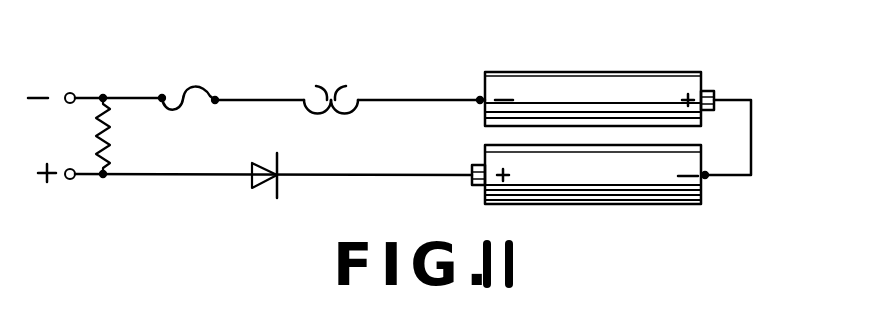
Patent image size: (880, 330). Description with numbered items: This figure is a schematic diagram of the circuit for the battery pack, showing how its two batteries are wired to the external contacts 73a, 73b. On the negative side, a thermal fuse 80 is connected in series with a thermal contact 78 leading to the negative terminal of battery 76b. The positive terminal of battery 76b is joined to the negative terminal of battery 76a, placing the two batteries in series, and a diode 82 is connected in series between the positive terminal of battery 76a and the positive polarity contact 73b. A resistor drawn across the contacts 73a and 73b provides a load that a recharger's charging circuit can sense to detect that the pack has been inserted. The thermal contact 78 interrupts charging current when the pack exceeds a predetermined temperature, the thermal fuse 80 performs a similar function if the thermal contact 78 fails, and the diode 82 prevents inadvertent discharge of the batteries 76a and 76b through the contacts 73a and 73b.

The contact 73a is at (70, 92).
The contact 73b is at (73, 178).
The thermal fuse 80 is at (186, 87).
The thermal contact 78 is at (332, 88).
The diode 82 is at (266, 186).
The battery 76b is at (658, 86).
The battery 76a is at (659, 190).